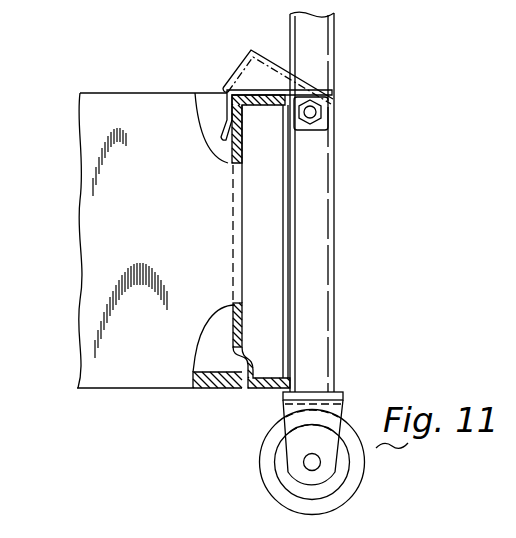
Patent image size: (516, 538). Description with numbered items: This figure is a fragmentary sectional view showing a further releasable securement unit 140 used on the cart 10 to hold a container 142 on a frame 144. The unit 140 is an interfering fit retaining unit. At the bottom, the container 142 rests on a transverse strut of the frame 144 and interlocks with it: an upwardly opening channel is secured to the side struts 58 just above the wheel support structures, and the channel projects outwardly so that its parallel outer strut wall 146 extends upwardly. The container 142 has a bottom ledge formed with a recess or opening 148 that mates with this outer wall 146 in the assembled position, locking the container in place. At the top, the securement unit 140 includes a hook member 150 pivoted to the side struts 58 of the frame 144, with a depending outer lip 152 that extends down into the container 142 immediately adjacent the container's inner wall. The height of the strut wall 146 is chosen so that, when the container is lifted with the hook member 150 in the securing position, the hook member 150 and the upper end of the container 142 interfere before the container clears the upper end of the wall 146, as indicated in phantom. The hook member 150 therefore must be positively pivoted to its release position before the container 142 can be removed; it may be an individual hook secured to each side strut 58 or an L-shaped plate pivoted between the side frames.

The shopping cart 10 is at (81, 252).
The side strut 58 is at (327, 297).
The releasable securement unit 140 is at (235, 67).
The container 142 is at (170, 244).
The frame 144 is at (338, 198).
The outer strut wall 146 is at (262, 362).
The recess or opening 148 is at (243, 393).
The hook member 150 is at (224, 110).
The depending outer lip 152 is at (220, 128).